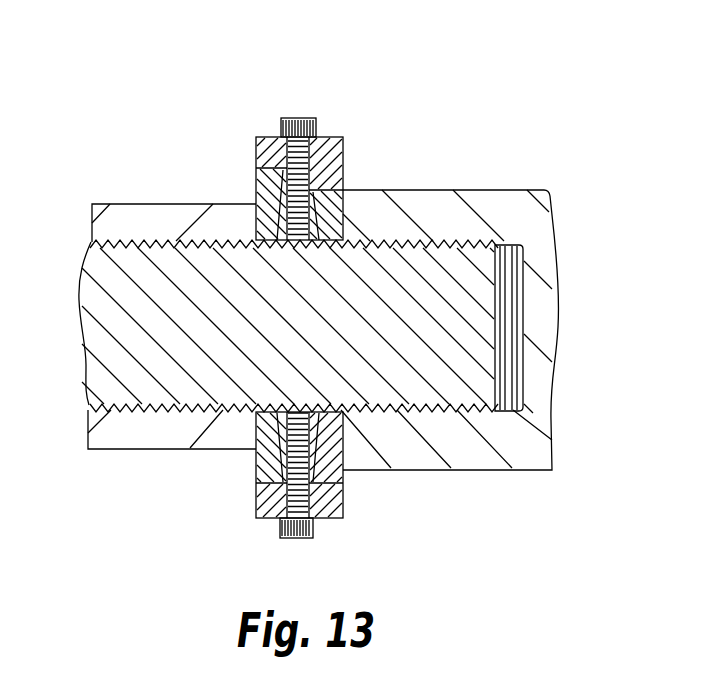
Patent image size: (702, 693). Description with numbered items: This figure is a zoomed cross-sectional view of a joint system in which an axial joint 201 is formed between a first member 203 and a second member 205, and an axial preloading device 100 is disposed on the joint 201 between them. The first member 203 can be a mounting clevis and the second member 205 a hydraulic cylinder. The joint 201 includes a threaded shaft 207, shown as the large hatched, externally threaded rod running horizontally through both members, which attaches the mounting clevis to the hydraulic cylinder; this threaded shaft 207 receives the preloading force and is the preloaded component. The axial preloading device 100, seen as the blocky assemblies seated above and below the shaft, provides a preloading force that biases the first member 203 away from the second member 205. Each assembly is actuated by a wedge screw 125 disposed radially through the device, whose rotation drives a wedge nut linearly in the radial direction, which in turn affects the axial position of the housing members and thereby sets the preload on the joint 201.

The axial preloading device 100 is at (246, 180).
The wedge screw 125 is at (307, 114).
The axial joint 201 is at (466, 497).
The first member 203 is at (505, 206).
The second member 205 is at (136, 218).
The threaded shaft 207 is at (138, 378).